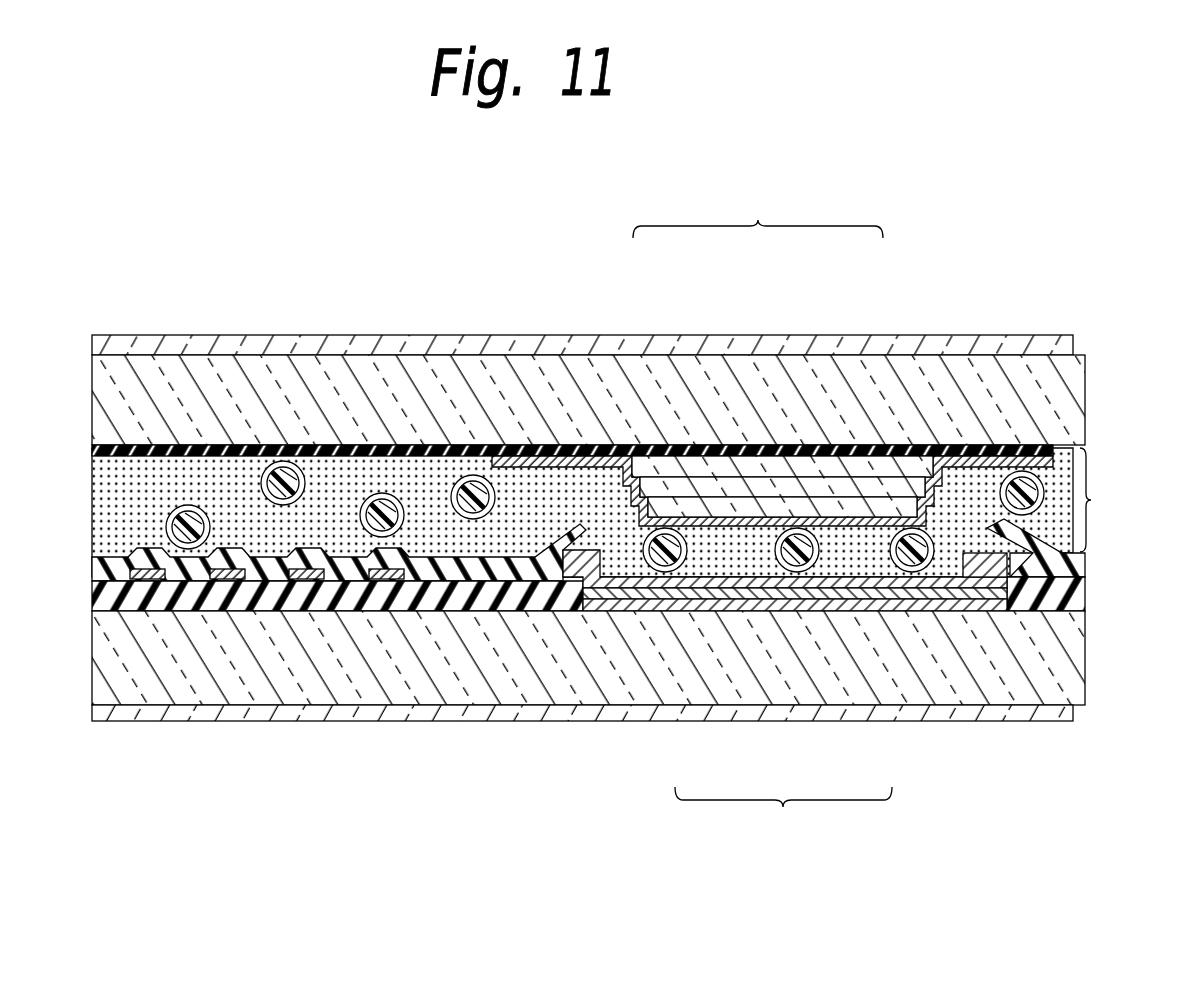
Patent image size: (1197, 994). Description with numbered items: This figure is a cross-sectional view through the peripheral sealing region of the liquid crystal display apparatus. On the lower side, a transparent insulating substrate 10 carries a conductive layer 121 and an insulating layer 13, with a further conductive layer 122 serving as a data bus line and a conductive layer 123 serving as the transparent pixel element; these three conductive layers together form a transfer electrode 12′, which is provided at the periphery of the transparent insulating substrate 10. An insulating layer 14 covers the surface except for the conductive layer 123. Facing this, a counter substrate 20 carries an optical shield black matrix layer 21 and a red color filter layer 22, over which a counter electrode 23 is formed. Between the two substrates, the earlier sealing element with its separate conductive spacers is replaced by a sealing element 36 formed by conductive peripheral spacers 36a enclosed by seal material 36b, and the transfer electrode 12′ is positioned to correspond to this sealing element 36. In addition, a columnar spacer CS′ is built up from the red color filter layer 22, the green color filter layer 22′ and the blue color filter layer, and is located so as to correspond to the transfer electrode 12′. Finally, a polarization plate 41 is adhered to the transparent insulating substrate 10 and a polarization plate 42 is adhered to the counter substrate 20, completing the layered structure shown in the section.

The transparent insulating substrate 10 is at (1077, 653).
The insulating layer 13 is at (1073, 608).
The insulating layer 14 is at (1058, 566).
The counter substrate 20 is at (1072, 383).
The optical shield black matrix layer 21 is at (333, 450).
The red color filter layer 22 is at (813, 463).
The green color filter layer 22′ is at (737, 480).
The counter electrode 23 is at (520, 460).
The sealing element 36 is at (1113, 500).
The conductive peripheral spacers 36a is at (953, 480).
The seal material 36b is at (272, 463).
The polarization plate 41 is at (1040, 722).
The polarization plate 42 is at (1062, 337).
The conductive layer 121 is at (835, 605).
The conductive layer 122 is at (777, 594).
The conductive layer 123 is at (685, 588).
The transfer electrode 12′ is at (780, 818).
The columnar spacer CS′ is at (758, 205).